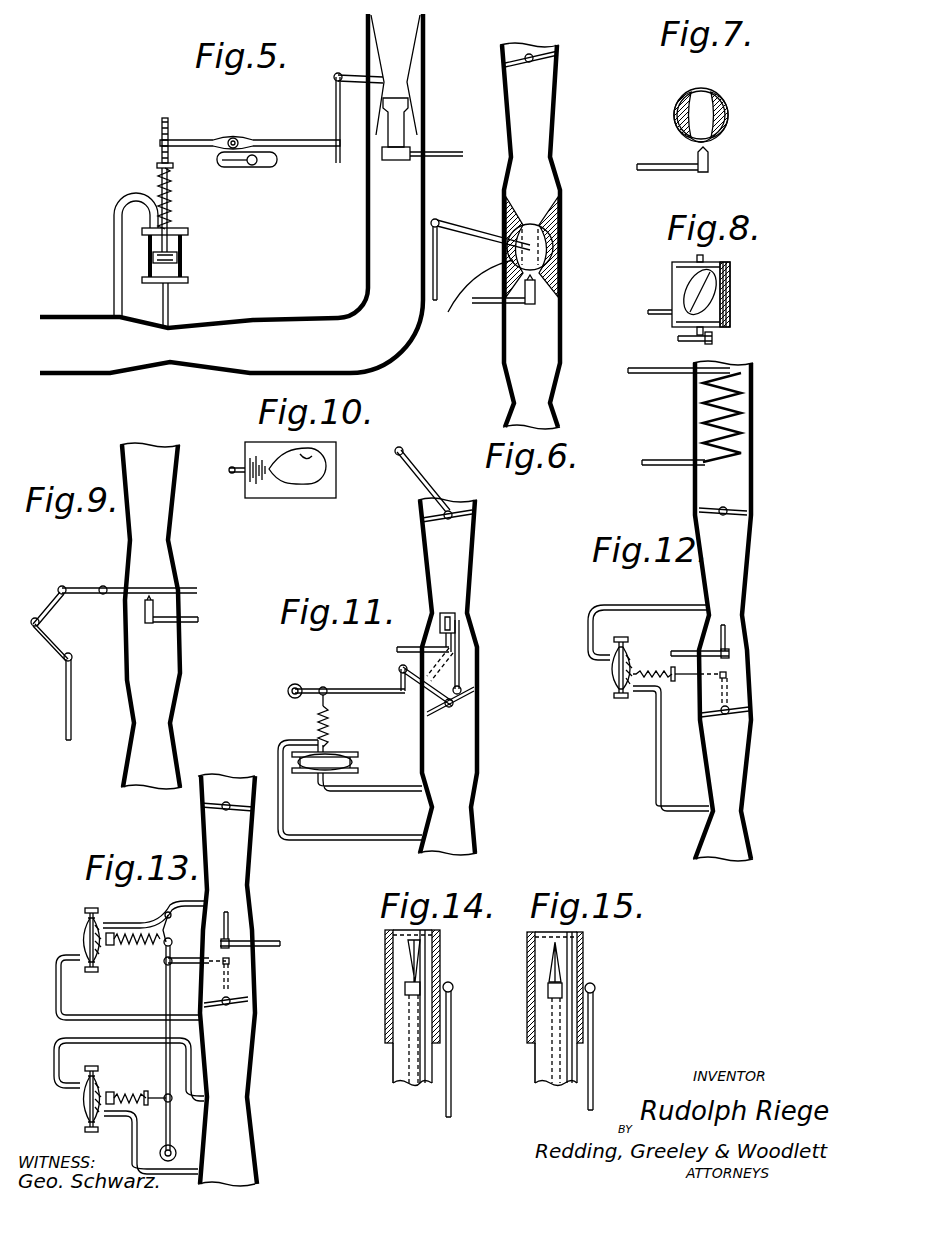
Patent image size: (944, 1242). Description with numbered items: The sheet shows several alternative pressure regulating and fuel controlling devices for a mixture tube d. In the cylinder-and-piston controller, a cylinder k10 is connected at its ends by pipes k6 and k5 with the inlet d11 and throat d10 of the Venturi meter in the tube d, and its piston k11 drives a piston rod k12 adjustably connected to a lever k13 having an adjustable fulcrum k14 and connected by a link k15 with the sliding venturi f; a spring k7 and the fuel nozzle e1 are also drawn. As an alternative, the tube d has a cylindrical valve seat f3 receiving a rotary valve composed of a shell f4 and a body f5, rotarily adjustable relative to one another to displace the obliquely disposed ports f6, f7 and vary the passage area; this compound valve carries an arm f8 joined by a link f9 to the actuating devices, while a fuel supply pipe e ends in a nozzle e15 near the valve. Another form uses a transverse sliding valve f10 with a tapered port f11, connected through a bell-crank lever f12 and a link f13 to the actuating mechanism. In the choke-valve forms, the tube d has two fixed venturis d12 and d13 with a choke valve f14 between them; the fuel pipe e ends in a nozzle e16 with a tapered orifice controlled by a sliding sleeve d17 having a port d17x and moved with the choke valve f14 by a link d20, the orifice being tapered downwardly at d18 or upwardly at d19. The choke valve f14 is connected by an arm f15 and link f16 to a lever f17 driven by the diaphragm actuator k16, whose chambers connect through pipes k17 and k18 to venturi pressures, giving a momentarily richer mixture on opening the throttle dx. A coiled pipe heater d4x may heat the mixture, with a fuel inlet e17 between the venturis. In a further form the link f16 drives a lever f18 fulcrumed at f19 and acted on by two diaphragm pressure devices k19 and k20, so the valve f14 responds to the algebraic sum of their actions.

In FIG. 5, the tube d is at (428, 46).
In FIG. 6, the tube d is at (562, 196).
In FIG. 9, the tube d is at (170, 534).
In FIG. 11, the tube d is at (478, 701).
In FIG. 12, the tube d is at (766, 508).
In FIG. 13, the tube d is at (227, 980).
In FIG. 6, the throttle dx is at (560, 50).
In FIG. 11, the throttle dx is at (455, 513).
In FIG. 12, the throttle dx is at (709, 512).
In FIG. 13, the throttle dx is at (218, 800).
In FIG. 12, the coiled pipe heater d4x is at (770, 394).
In FIG. 5, the throat d10 is at (210, 351).
In FIG. 5, the inlet d11 is at (176, 341).
In FIG. 11, the venturi d12 is at (457, 809).
In FIG. 12, the venturi d12 is at (729, 814).
In FIG. 13, the venturi d12 is at (228, 1089).
In FIG. 11, the venturi d13 is at (447, 591).
In FIG. 12, the venturi d13 is at (727, 580).
In FIG. 13, the venturi d13 is at (229, 889).
In FIG. 11, the sliding fuel orifice controlling sleeve d17 is at (460, 621).
In FIG. 14, the sliding fuel orifice controlling sleeve d17 is at (437, 939).
In FIG. 15, the sliding fuel orifice controlling sleeve d17 is at (580, 941).
In FIG. 14, the port d17x is at (402, 1003).
In FIG. 15, the port d17x is at (593, 1001).
In FIG. 14, the downwardly tapered orifice d18 is at (408, 946).
In FIG. 15, the upwardly tapered orifice d19 is at (560, 969).
In FIG. 11, the link d20 is at (460, 644).
In FIG. 14, the link d20 is at (472, 1044).
In FIG. 15, the link d20 is at (625, 1049).
In FIG. 5, the sliding venturi f is at (418, 68).
In FIG. 6, the cylindrical valve seat f3 is at (554, 231).
In FIG. 6, the shell f4 is at (475, 298).
In FIG. 7, the shell f4 is at (718, 142).
In FIG. 7, the body f5 is at (727, 99).
In FIG. 8, the body f5 is at (701, 294).
In FIG. 7, the obliquely disposed port f6 is at (688, 91).
In FIG. 8, the obliquely disposed port f6 is at (720, 274).
In FIG. 7, the obliquely disposed port f7 is at (699, 100).
In FIG. 8, the obliquely disposed port f7 is at (692, 279).
In FIG. 6, the arm f8 is at (487, 217).
In FIG. 8, the arm f8 is at (678, 340).
In FIG. 6, the link f9 is at (442, 261).
In FIG. 9, the sliding valve f10 is at (170, 590).
In FIG. 10, the sliding valve f10 is at (288, 493).
In FIG. 10, the tapered port f11 is at (312, 456).
In FIG. 9, the bell-crank lever f12 is at (62, 590).
In FIG. 9, the link f13 is at (84, 674).
In FIG. 11, the choke valve f14 is at (440, 704).
In FIG. 12, the choke valve f14 is at (739, 715).
In FIG. 13, the choke valve f14 is at (268, 991).
In FIG. 11, the arm f15 is at (455, 653).
In FIG. 12, the arm f15 is at (727, 687).
In FIG. 13, the arm f15 is at (180, 988).
In FIG. 11, the link f16 is at (403, 673).
In FIG. 13, the link f16 is at (167, 962).
In FIG. 11, the lever f17 is at (341, 692).
In FIG. 13, the lever f18 is at (160, 1072).
In FIG. 13, the fulcrum f19 is at (202, 1146).
In FIG. 5, the fuel supply pipe e is at (463, 140).
In FIG. 6, the fuel supply pipe e is at (491, 303).
In FIG. 7, the fuel supply pipe e is at (678, 171).
In FIG. 8, the fuel supply pipe e is at (690, 305).
In FIG. 9, the fuel supply pipe e is at (197, 621).
In FIG. 11, the fuel supply pipe e is at (401, 648).
In FIG. 12, the fuel supply pipe e is at (670, 638).
In FIG. 13, the fuel supply pipe e is at (256, 941).
In FIG. 14, the fuel supply pipe e is at (395, 1088).
In FIG. 15, the fuel supply pipe e is at (535, 1088).
In FIG. 5, the fuel nozzle e1 is at (418, 109).
In FIG. 6, the nozzle e15 is at (576, 284).
In FIG. 7, the nozzle e15 is at (674, 155).
In FIG. 8, the nozzle e15 is at (720, 301).
In FIG. 9, the nozzle e15 is at (153, 609).
In FIG. 11, the nozzle e16 is at (440, 615).
In FIG. 14, the nozzle e16 is at (387, 929).
In FIG. 15, the nozzle e16 is at (535, 937).
In FIG. 12, the fuel inlet e17 is at (727, 634).
In FIG. 13, the fuel inlet e17 is at (229, 922).
In FIG. 5, the pipe k5 is at (114, 264).
In FIG. 5, the pipe k6 is at (177, 313).
In FIG. 5, the spring k7 is at (173, 201).
In FIG. 5, the cylinder k10 is at (187, 248).
In FIG. 5, the piston k11 is at (183, 262).
In FIG. 5, the piston rod k12 is at (160, 158).
In FIG. 5, the lever k13 is at (220, 118).
In FIG. 5, the adjustable fulcrum k14 is at (237, 135).
In FIG. 5, the link k15 is at (337, 118).
In FIG. 11, the pressure controlled actuator k16 is at (316, 791).
In FIG. 12, the pressure controlled actuator k16 is at (618, 687).
In FIG. 11, the pipe k17 is at (369, 836).
In FIG. 12, the pipe k17 is at (659, 775).
In FIG. 11, the pipe k18 is at (403, 784).
In FIG. 12, the pipe k18 is at (657, 608).
In FIG. 13, the diaphragm pressure device k19 is at (80, 930).
In FIG. 13, the diaphragm pressure device k20 is at (80, 1104).